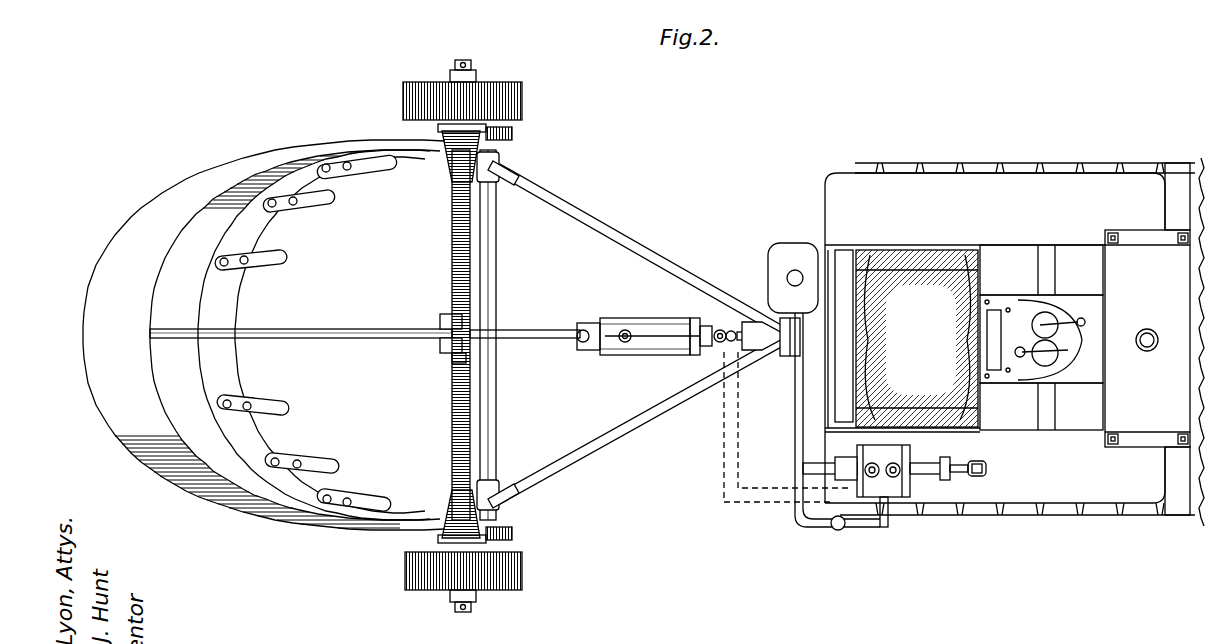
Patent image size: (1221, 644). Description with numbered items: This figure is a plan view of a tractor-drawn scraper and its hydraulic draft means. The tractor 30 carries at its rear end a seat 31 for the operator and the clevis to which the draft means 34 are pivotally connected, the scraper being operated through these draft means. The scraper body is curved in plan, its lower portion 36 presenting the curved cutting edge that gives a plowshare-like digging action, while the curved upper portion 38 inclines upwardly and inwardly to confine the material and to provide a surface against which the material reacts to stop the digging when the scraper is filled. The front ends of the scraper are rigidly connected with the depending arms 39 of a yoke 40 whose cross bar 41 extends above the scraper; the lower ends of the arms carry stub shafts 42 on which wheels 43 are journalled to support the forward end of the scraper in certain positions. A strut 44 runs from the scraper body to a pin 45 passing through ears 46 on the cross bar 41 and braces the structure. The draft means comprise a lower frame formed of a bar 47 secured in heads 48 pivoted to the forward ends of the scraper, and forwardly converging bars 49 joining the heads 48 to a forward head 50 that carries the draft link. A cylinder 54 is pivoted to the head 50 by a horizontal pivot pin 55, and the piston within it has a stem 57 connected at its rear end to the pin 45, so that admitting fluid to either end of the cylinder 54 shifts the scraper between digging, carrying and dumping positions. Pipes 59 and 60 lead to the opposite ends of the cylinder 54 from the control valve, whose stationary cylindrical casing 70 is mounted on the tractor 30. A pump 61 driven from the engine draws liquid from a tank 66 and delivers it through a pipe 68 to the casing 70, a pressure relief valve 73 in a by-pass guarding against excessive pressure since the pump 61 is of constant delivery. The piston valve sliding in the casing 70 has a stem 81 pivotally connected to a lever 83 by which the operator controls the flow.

The tractor 30 is at (1014, 342).
The seat 31 is at (846, 376).
The draft means 34 is at (753, 378).
The lower portion of scraper body 36 is at (240, 318).
The upper portion of scraper 38 is at (152, 236).
The depending arms of yoke 39 is at (490, 128).
The yoke 40 is at (523, 332).
The cross bar 41 is at (455, 238).
The stub shaft 42 is at (463, 60).
The wheel 43 is at (515, 92).
The strut 44 is at (396, 328).
The pin 45 is at (455, 362).
The ears 46 is at (450, 320).
The bar 47 is at (497, 241).
The head 48 is at (500, 163).
The forwardly converging bar 49 is at (625, 238).
The head 50 is at (755, 360).
The cylinder 54 is at (658, 350).
The horizontal pivot pin 55 is at (752, 320).
The stem 57 is at (523, 330).
The pipe 59 is at (718, 330).
The pipe 60 is at (728, 342).
The pump 61 is at (798, 316).
The tank 66 is at (784, 252).
The pipe 68 is at (889, 522).
The cylindrical casing 70 is at (850, 465).
The pressure relief valve 73 is at (839, 531).
The stem 81 is at (956, 465).
The lever 83 is at (987, 469).